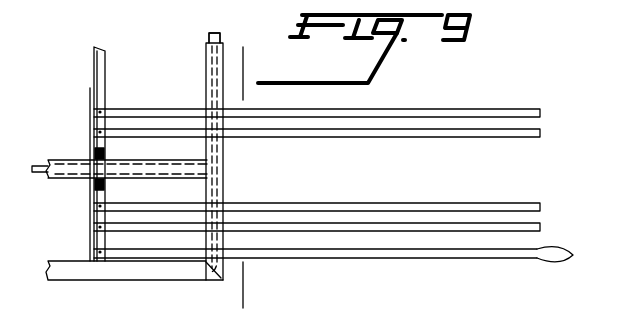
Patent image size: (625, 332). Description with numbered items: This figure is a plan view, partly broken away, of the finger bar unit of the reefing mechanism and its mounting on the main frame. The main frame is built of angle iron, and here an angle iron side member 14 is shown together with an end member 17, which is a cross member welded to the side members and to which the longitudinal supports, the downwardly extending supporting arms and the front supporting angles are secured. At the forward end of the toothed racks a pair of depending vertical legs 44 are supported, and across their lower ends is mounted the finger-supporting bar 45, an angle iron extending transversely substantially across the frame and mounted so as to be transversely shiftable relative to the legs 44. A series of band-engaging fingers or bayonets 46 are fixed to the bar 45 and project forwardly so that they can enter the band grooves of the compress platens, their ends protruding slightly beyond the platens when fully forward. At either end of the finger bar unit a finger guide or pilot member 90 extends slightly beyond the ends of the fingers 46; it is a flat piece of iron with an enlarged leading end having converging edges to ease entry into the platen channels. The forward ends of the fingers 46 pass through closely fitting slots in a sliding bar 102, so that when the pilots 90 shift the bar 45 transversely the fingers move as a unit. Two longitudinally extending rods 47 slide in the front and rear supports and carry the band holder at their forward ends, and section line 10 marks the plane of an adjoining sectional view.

The section line 10- 10 is at (252, 63).
The angle iron side member 14 is at (156, 280).
The end member 17 is at (222, 150).
The depending vertical leg 44 is at (88, 143).
The finger-supporting bar 45 is at (93, 68).
The band-engaging finger 46 is at (545, 133).
The rod 47 is at (37, 165).
The finger guide or pilot member 90 is at (432, 258).
The sliding bar 102 is at (211, 33).